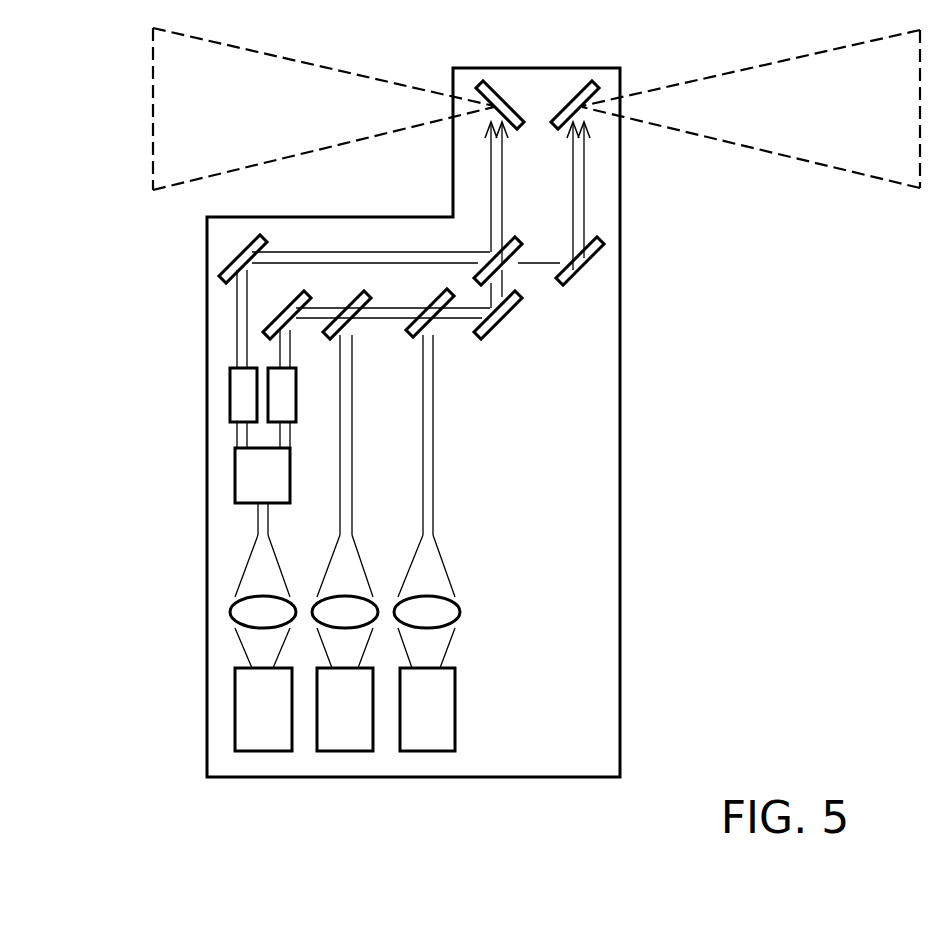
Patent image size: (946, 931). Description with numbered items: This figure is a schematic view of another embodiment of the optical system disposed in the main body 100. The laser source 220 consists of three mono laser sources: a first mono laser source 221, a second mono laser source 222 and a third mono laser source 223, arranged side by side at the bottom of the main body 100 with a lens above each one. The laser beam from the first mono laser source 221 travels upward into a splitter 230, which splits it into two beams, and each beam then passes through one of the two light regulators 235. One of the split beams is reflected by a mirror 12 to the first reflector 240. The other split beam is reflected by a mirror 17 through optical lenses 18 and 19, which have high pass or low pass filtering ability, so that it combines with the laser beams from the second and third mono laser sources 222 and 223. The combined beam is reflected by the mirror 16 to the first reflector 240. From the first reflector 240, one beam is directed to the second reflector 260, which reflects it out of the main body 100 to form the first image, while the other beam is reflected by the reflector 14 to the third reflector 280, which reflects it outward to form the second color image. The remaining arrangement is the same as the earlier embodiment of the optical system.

The main body 100 is at (621, 488).
The mirror 12 is at (232, 252).
The reflector 14 is at (600, 268).
The mirror 16 is at (500, 321).
The mirror 17 is at (300, 292).
The optical lens 18 is at (361, 292).
The optical lens 19 is at (445, 292).
The first reflector 240 is at (503, 270).
The second reflector 260 is at (505, 80).
The third reflector 280 is at (570, 80).
The light regulator 235 is at (268, 382).
The splitter 230 is at (235, 475).
The laser source 220 is at (345, 770).
The first mono laser source 221 is at (263, 738).
The second mono laser source 222 is at (345, 738).
The third mono laser source 223 is at (427, 744).